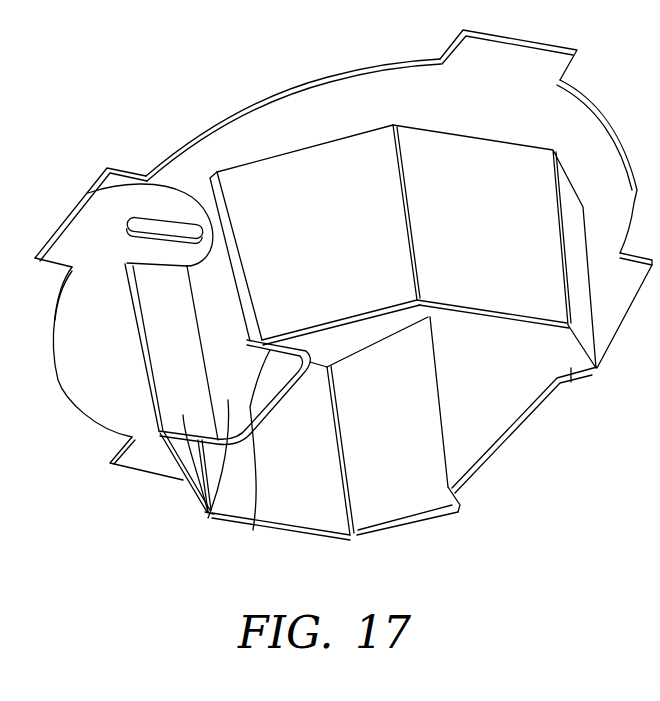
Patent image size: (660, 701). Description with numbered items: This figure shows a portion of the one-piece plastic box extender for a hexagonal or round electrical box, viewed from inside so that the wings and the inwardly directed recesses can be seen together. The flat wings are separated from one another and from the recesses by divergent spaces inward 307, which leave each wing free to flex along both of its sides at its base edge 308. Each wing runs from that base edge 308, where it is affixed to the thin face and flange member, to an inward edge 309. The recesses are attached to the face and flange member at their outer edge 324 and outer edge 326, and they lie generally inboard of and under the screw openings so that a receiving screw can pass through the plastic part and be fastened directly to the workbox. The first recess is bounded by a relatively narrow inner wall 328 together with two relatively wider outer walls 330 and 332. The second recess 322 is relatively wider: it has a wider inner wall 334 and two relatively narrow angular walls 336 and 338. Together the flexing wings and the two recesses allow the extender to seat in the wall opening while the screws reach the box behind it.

The divergent spaces inward 307 is at (420, 290).
The base edge 308 is at (467, 137).
The inward edge 309 is at (533, 322).
The second recess 322 is at (502, 423).
The outer edge 324 is at (88, 192).
The outer edge 326 is at (192, 340).
The inner wall 328 is at (208, 520).
The outer wall 330 is at (178, 476).
The outer wall 332 is at (253, 530).
The inner wall 334 is at (520, 400).
The angular wall 336 is at (463, 492).
The angular wall 338 is at (572, 382).